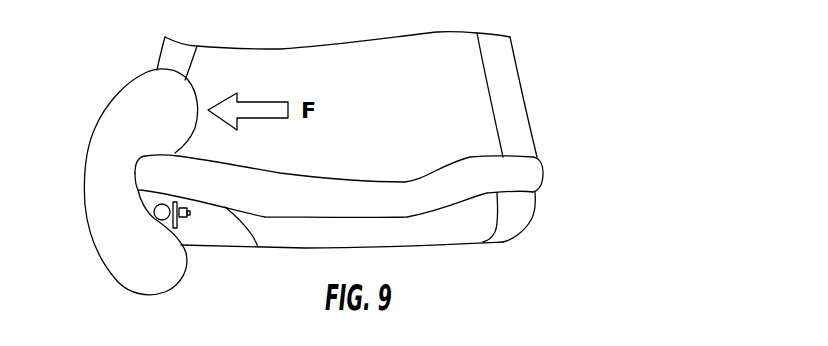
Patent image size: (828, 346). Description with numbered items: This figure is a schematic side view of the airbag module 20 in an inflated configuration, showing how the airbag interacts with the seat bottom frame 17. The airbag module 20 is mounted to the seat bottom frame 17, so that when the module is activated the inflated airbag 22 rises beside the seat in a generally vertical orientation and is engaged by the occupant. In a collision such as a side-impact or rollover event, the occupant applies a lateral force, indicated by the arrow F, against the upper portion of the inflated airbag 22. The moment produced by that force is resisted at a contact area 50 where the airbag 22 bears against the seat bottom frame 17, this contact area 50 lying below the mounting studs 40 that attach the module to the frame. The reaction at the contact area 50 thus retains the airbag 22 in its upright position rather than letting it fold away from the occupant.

The airbag module 20 is at (108, 67).
The airbag 22 is at (88, 148).
The seat bottom frame 17 is at (171, 220).
The contact area 50 is at (192, 213).
The mounting studs 40 is at (258, 247).